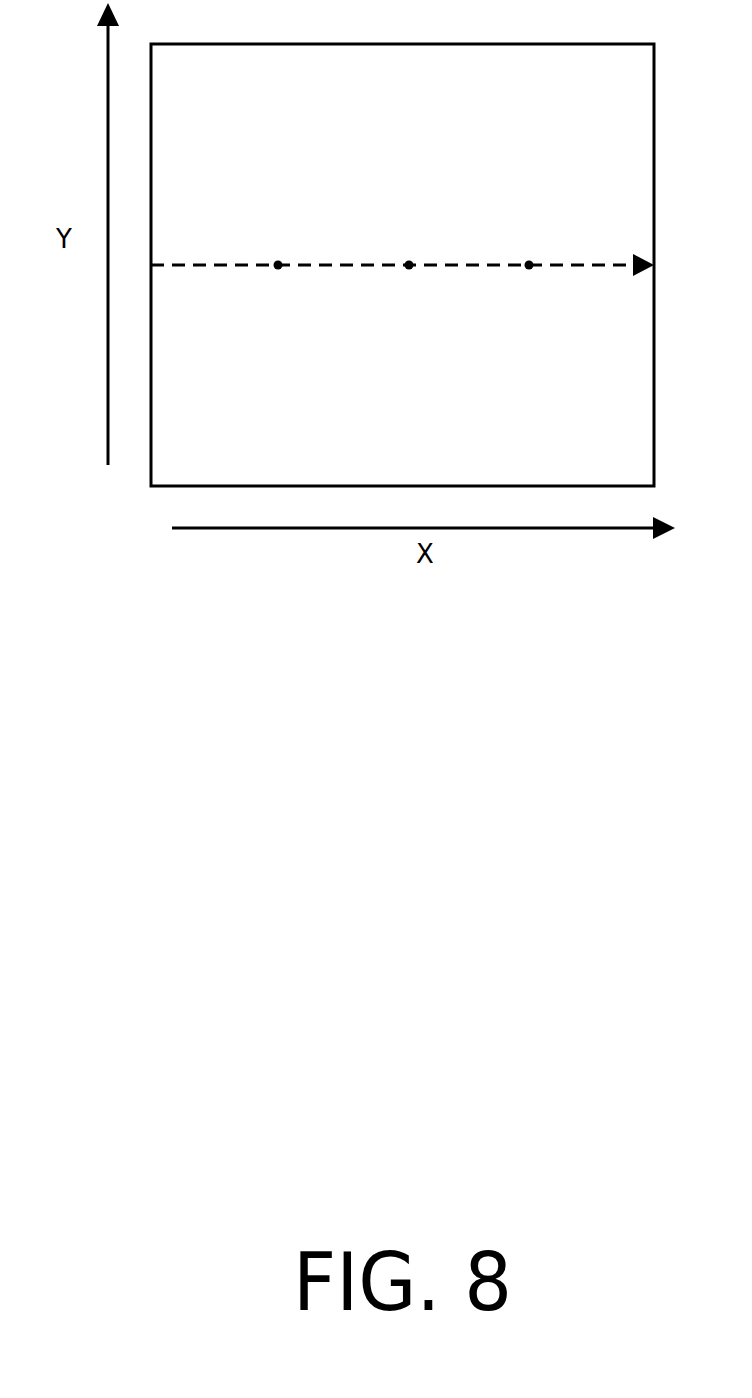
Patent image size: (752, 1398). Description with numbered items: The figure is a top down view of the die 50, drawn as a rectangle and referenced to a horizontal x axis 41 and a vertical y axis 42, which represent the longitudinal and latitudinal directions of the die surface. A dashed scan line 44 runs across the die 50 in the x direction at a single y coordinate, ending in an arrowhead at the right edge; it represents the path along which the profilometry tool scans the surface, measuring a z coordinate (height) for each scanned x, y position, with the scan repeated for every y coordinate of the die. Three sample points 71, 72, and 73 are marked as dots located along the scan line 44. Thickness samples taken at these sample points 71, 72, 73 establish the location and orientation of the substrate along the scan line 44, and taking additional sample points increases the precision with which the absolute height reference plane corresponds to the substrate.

The x axis 41 is at (572, 528).
The y axis 42 is at (108, 118).
The scan line 44 is at (488, 265).
The die 50 is at (402, 265).
The sample point 71 is at (278, 272).
The sample point 72 is at (409, 272).
The sample point 73 is at (529, 272).